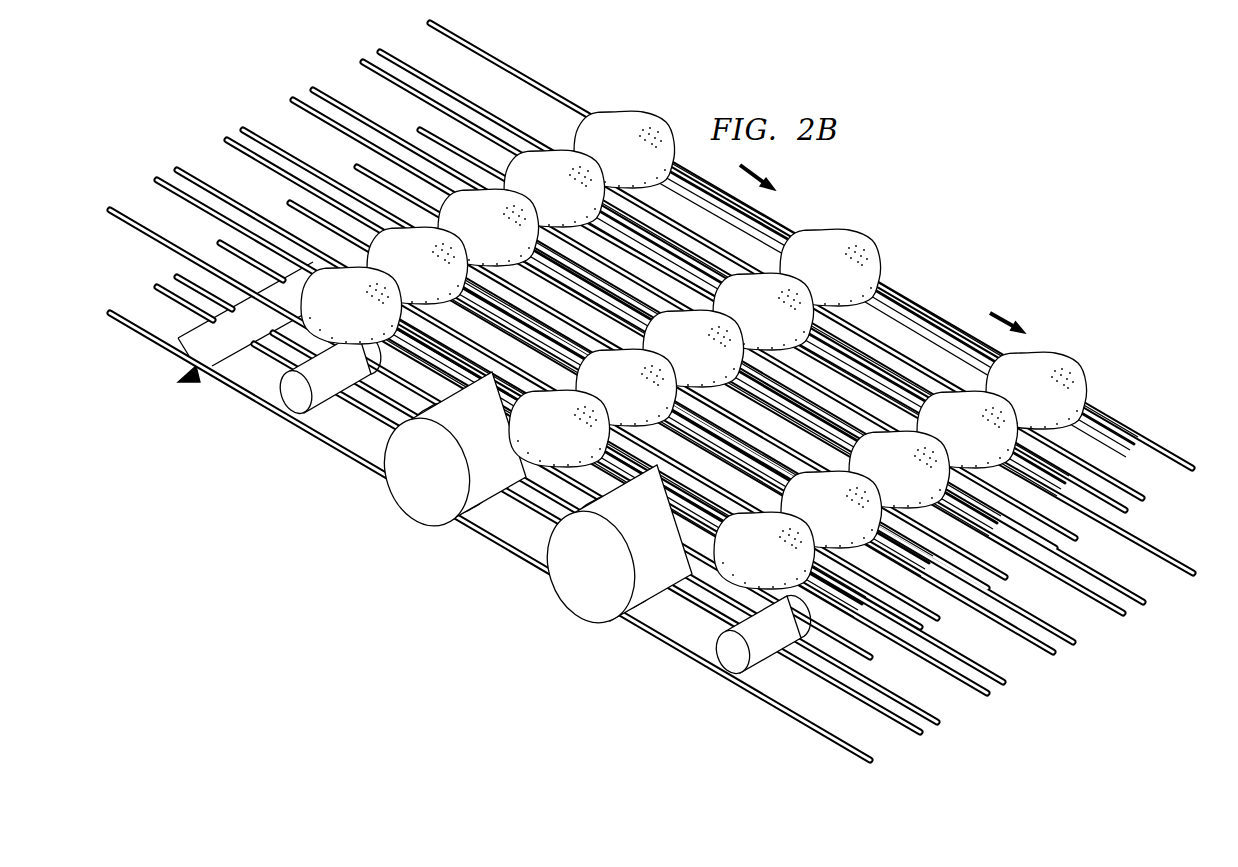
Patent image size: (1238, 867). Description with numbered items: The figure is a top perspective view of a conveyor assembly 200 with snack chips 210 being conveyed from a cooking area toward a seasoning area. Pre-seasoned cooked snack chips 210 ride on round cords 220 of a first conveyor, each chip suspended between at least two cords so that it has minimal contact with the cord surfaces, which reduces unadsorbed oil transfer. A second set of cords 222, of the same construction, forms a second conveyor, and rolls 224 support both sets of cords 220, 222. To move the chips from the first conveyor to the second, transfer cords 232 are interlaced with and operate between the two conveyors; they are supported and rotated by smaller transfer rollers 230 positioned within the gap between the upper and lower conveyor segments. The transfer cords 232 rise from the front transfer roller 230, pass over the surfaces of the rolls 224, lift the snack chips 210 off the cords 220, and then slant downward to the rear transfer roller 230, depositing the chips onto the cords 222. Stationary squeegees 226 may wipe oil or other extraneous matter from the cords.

The conveyor assembly 200 is at (862, 206).
The snack chips 210 is at (645, 112).
The cords 220 is at (527, 78).
The cords 222 is at (1120, 423).
The rolls 224 is at (417, 513).
The squeegees 226 is at (197, 383).
The transfer rollers 230 is at (295, 403).
The transfer cords 232 is at (893, 307).